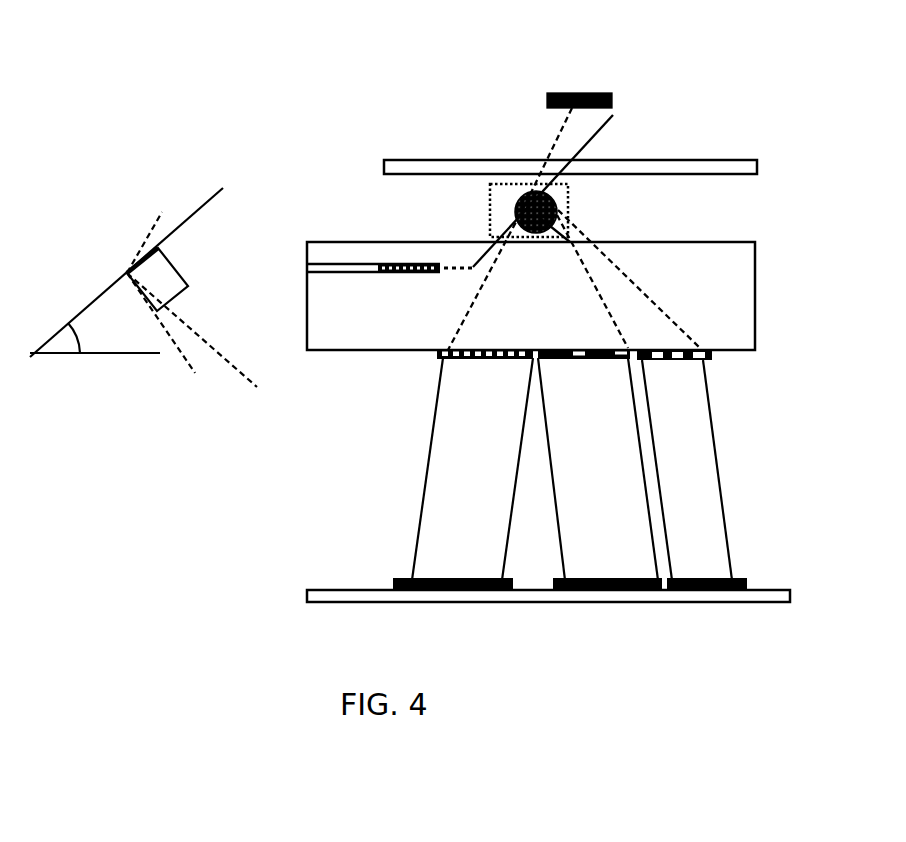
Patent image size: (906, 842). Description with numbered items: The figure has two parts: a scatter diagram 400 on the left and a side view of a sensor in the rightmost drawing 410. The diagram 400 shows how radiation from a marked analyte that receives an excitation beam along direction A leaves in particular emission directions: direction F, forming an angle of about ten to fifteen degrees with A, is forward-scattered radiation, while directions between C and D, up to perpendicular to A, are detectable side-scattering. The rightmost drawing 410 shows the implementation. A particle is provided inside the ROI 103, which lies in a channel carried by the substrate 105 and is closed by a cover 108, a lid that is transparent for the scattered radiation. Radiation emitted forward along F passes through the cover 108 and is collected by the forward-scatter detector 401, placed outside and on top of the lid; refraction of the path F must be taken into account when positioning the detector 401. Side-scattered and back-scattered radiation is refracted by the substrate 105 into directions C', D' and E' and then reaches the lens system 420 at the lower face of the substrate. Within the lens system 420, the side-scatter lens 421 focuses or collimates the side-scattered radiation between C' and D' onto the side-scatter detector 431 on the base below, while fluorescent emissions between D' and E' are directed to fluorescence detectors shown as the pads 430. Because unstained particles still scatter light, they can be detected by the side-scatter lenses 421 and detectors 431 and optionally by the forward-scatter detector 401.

The diagram 400 is at (118, 177).
The rightmost drawing 410 is at (367, 118).
The forward-scatter detector 401 is at (612, 100).
The cover 108 is at (700, 175).
The ROI 103 is at (568, 200).
The substrate 105 is at (378, 328).
The lens system 420 is at (412, 368).
The side-scatter lens 421 is at (712, 362).
The detector pads 430 is at (380, 570).
The side-scatter detector 431 is at (738, 580).